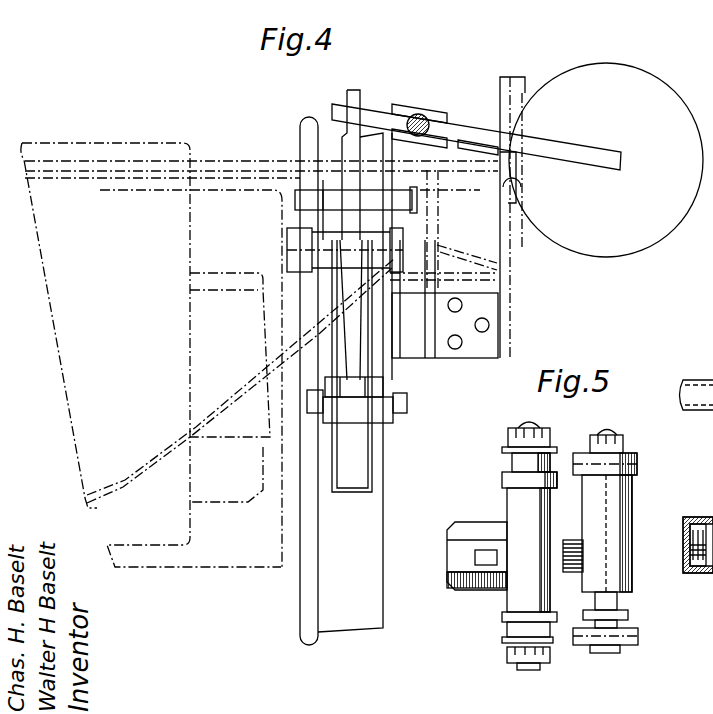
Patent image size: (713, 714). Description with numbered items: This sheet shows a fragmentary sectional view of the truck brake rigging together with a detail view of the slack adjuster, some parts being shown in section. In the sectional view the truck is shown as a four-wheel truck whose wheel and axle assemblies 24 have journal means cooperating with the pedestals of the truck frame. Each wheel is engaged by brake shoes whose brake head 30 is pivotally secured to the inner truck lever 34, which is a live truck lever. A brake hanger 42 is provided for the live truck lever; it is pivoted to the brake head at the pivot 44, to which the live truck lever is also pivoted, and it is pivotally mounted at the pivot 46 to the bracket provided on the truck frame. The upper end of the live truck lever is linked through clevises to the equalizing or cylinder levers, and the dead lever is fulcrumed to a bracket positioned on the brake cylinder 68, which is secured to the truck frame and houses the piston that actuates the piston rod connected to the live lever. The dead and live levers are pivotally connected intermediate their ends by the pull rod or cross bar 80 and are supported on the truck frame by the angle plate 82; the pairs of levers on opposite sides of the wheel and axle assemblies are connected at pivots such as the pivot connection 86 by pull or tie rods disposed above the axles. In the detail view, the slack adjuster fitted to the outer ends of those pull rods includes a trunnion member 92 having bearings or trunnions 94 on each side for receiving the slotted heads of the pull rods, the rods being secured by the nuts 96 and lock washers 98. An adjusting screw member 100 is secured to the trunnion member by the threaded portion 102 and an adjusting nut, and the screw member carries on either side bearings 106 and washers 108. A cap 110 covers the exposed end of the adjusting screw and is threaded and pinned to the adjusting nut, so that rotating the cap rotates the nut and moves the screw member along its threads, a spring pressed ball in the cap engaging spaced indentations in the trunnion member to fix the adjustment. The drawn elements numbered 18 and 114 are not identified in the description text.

In FIG. 5, the shaft 18 is at (697, 508).
In FIG. 4, the wheel and axle assemblies 24 is at (350, 624).
In FIG. 4, the brake head 30 is at (357, 447).
In FIG. 4, the inner truck lever 34 is at (348, 147).
In FIG. 4, the brake hanger 42 is at (387, 373).
In FIG. 4, the pivot 44 is at (407, 403).
In FIG. 4, the pivot mounting 46 is at (417, 193).
In FIG. 4, the brake cylinder 68 is at (606, 72).
In FIG. 4, the pull rod or cross bar 80 is at (418, 114).
In FIG. 4, the angle plate 82 is at (477, 145).
In FIG. 4, the pivot connection 86 is at (403, 248).
In FIG. 5, the trunnion member 92 is at (500, 595).
In FIG. 5, the bearings or trunnions 94 is at (512, 460).
In FIG. 5, the nuts 96 is at (540, 435).
In FIG. 5, the lock washers 98 is at (510, 445).
In FIG. 5, the adjusting screw member 100 is at (620, 537).
In FIG. 5, the threaded portion 102 is at (566, 540).
In FIG. 5, the bearings 106 is at (628, 603).
In FIG. 5, the washers 108 is at (637, 462).
In FIG. 5, the cap 110 is at (465, 582).
In FIG. 4, the bracket plate 114 is at (475, 355).